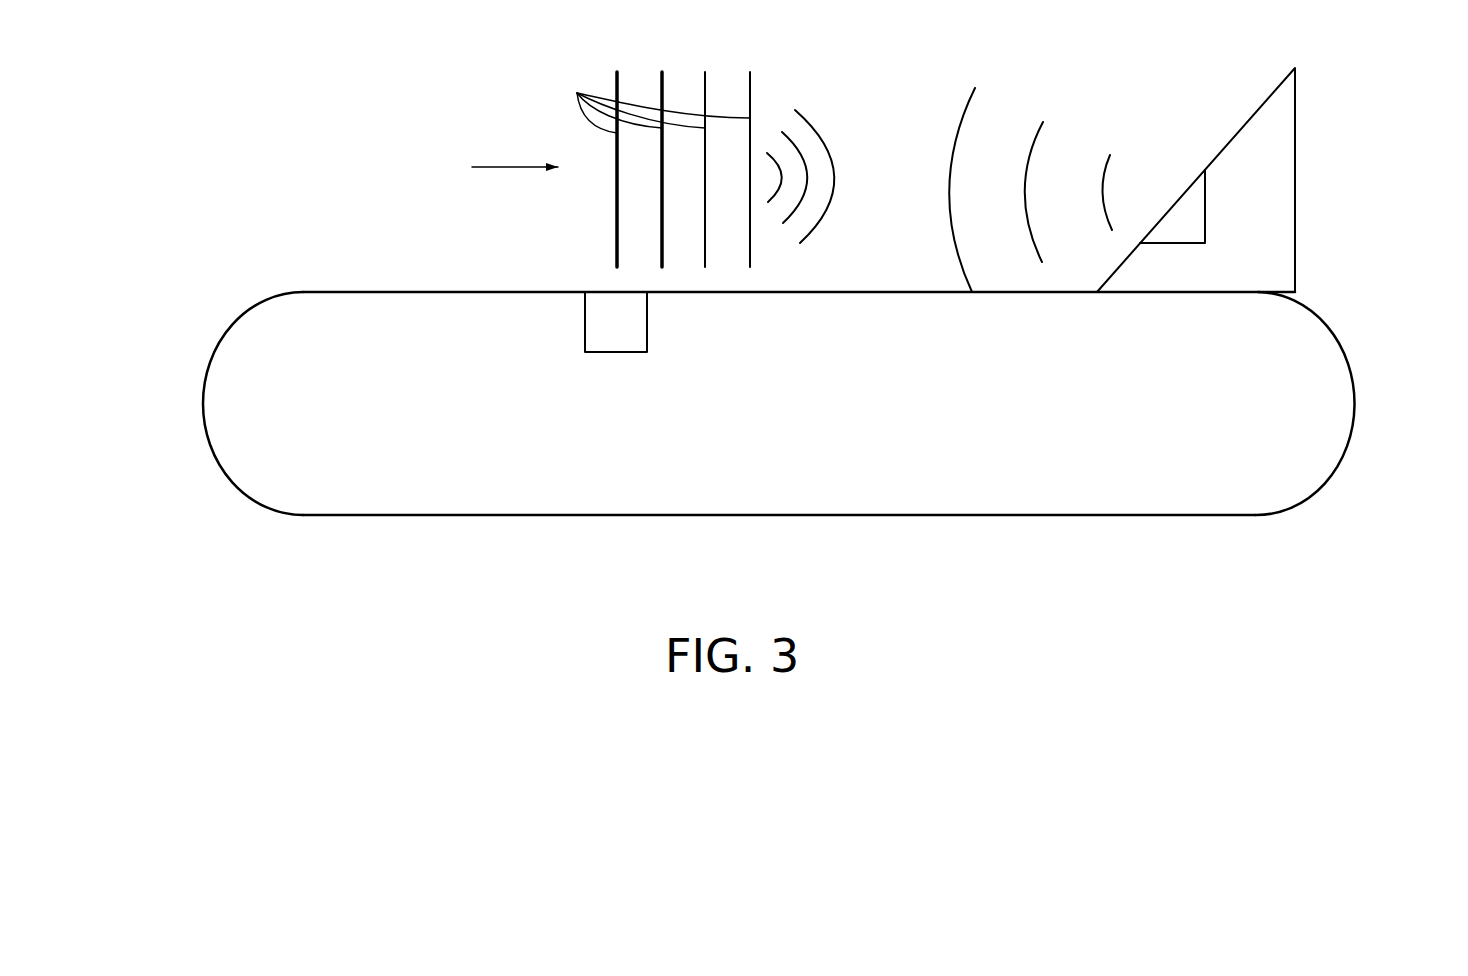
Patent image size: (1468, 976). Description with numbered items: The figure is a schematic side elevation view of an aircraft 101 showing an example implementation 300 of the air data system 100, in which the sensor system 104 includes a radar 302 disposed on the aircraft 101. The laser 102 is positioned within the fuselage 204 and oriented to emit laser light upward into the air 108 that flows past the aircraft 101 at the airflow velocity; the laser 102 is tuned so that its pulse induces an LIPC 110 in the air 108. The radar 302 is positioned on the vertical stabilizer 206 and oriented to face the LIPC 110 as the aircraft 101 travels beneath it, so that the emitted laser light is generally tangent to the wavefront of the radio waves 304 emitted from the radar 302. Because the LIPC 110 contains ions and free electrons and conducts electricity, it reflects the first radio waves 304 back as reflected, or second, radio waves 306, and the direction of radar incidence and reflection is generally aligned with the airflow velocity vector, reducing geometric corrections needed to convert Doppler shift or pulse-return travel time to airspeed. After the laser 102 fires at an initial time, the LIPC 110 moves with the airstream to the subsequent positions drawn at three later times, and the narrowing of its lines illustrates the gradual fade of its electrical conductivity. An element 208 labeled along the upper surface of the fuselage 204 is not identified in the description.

The air data system 100 is at (200, 250).
The example implementation 300 is at (770, 315).
The aircraft 101 is at (257, 557).
The laser 102 is at (603, 352).
The sensor system 104 is at (1299, 207).
The radar 302 is at (1205, 217).
The air 108 is at (385, 105).
The LIPC 110 is at (642, 98).
The fuselage 204 is at (503, 498).
The vertical stabilizer 206 is at (1275, 143).
The outer surface of fuselage 208 is at (923, 293).
The radio waves 304 is at (1073, 107).
The reflected radio waves 306 is at (852, 105).